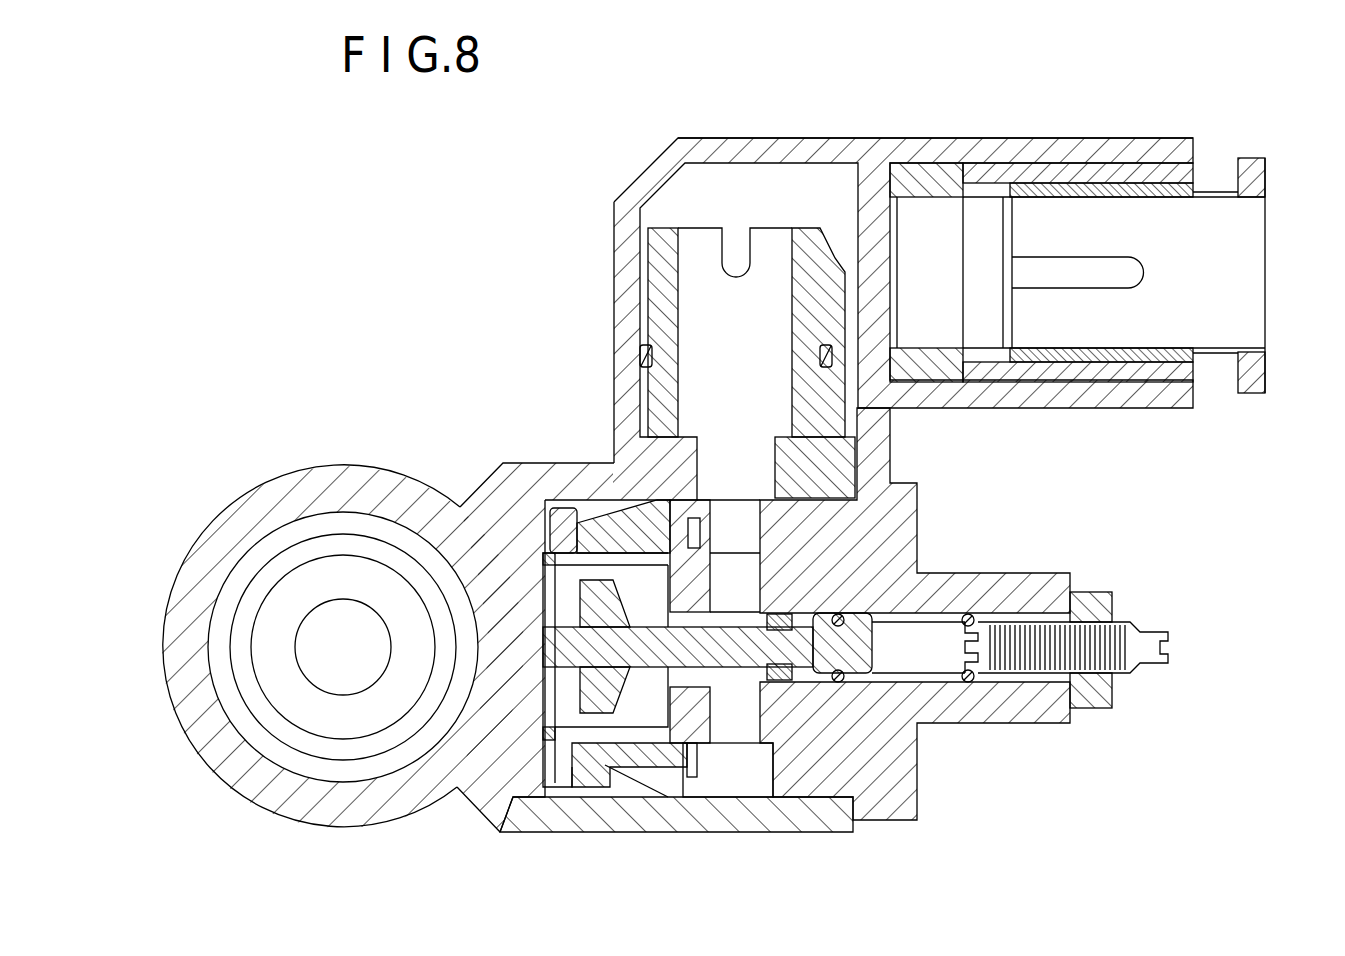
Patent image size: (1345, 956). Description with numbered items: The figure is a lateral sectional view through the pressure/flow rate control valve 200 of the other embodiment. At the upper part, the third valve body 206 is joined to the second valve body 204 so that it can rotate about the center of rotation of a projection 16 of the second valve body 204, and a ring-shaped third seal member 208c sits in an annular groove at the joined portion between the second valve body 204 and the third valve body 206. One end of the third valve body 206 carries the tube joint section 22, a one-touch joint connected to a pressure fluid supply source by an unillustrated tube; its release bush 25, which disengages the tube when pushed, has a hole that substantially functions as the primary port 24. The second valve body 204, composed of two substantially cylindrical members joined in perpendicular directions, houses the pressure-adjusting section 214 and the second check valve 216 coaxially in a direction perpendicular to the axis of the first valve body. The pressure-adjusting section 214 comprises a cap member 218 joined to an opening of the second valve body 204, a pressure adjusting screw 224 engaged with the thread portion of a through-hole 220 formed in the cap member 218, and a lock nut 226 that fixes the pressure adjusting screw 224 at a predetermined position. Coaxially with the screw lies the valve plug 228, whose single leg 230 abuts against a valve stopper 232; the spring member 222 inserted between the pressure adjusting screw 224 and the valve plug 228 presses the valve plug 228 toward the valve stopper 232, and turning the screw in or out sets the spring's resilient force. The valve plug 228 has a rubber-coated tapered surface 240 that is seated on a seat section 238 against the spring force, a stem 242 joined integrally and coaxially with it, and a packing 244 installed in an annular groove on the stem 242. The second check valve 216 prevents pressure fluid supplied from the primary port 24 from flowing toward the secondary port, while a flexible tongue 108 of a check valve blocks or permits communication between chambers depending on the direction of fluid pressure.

The pressure/flow rate control valve 200 is at (1030, 80).
The third valve body 206 is at (778, 148).
The projection 16 is at (655, 300).
The third seal member 208c is at (640, 360).
The pressure-adjusting section 214 is at (795, 495).
The tube joint section 22 is at (1080, 165).
The primary port 24 is at (1210, 345).
The release bush 25 is at (1248, 158).
The single leg 230 is at (540, 620).
The second valve body 204 is at (646, 832).
The tongue 108 is at (677, 823).
The seat section 238 is at (543, 660).
The valve stopper 232 is at (555, 690).
The second check valve 216 is at (612, 760).
The tapered surface 240 is at (630, 625).
The valve plug 228 is at (718, 660).
The cap member 218 is at (885, 803).
The stem 242 is at (845, 675).
The packing 244 is at (800, 680).
The through-hole 220 is at (935, 628).
The spring member 222 is at (970, 683).
The pressure adjusting screw 224 is at (1047, 675).
The lock nut 226 is at (1093, 592).